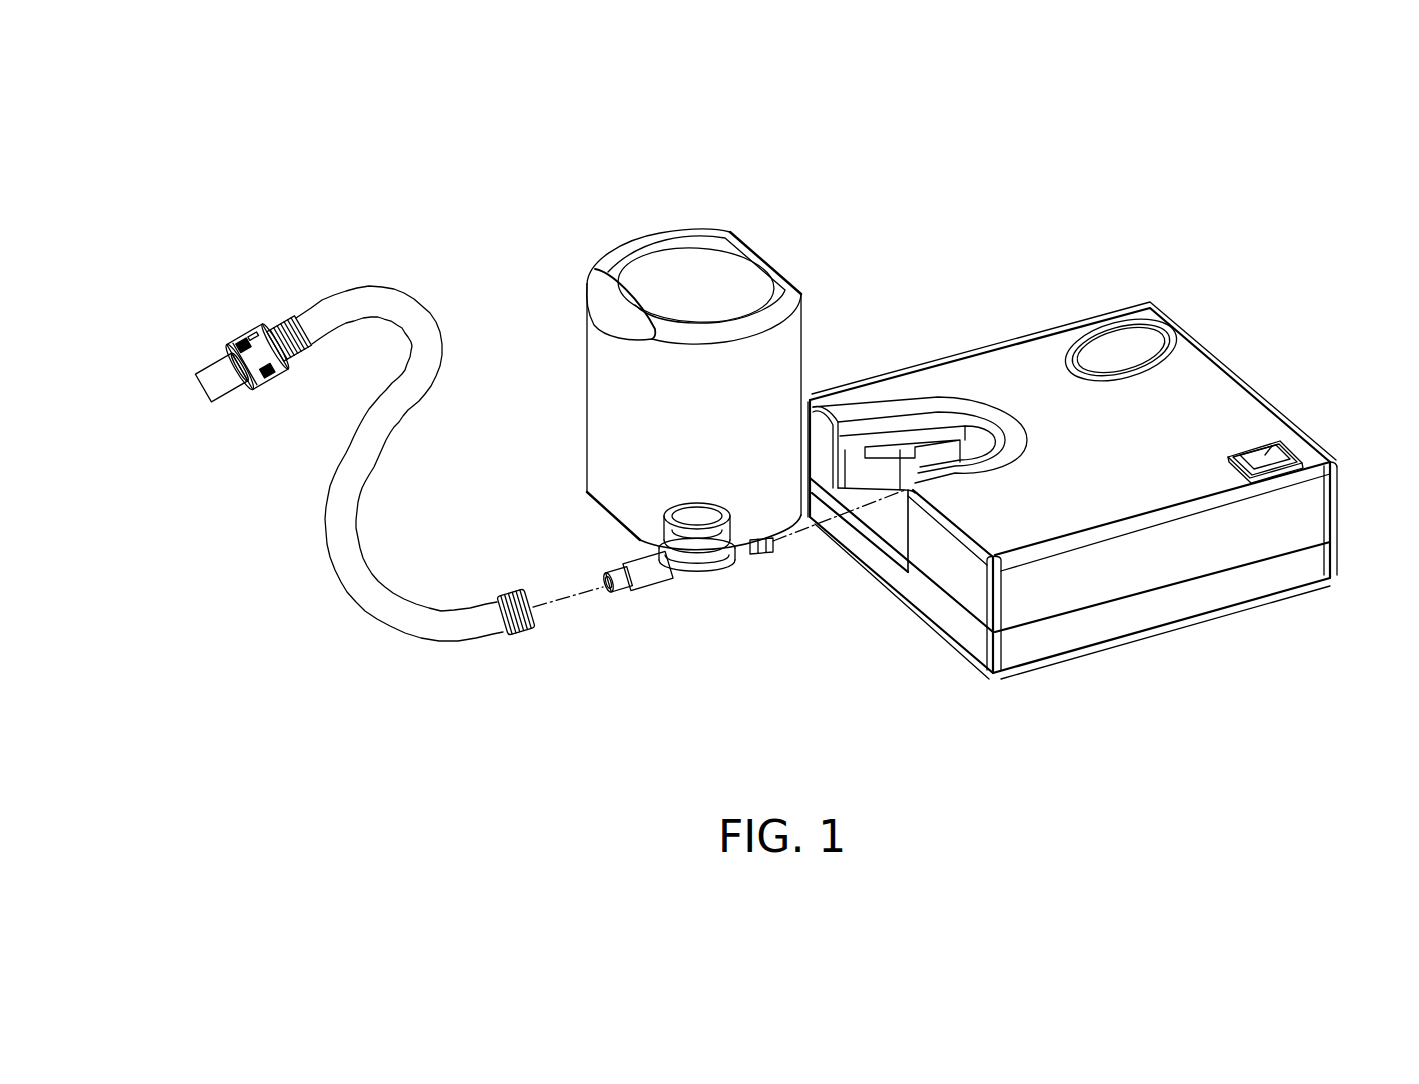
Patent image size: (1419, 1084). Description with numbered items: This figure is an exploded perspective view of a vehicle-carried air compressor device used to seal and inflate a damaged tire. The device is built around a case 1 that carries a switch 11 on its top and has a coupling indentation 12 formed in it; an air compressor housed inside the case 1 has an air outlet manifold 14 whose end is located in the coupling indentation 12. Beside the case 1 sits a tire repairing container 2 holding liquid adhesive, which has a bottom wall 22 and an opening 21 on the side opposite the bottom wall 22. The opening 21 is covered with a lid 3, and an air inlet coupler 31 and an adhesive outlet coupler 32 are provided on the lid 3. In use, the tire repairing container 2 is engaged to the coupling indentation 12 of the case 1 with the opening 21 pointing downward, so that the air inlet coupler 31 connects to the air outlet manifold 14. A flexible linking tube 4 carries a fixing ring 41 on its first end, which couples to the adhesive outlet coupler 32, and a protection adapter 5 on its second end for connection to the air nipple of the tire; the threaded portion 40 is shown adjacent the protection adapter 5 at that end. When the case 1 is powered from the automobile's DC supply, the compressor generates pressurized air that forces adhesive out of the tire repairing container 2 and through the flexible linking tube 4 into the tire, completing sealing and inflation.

The case 1 is at (1210, 405).
The switch 11 is at (1262, 448).
The coupling indentation 12 is at (897, 497).
The air outlet manifold 14 is at (962, 440).
The tire repairing container 2 is at (612, 400).
The opening 21 is at (628, 538).
The bottom wall 22 is at (680, 272).
The lid 3 is at (688, 565).
The air inlet coupler 31 is at (763, 552).
The adhesive outlet coupler 32 is at (622, 590).
The flexible linking tube 4 is at (348, 546).
The threaded end 40 is at (283, 322).
The fixing ring 41 is at (522, 628).
The protection adapter 5 is at (250, 333).